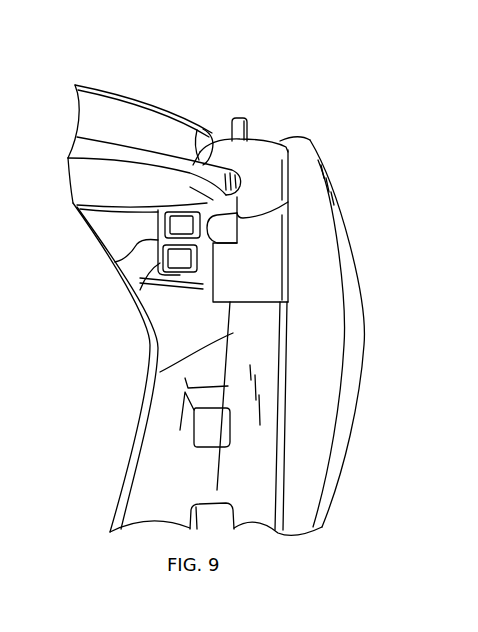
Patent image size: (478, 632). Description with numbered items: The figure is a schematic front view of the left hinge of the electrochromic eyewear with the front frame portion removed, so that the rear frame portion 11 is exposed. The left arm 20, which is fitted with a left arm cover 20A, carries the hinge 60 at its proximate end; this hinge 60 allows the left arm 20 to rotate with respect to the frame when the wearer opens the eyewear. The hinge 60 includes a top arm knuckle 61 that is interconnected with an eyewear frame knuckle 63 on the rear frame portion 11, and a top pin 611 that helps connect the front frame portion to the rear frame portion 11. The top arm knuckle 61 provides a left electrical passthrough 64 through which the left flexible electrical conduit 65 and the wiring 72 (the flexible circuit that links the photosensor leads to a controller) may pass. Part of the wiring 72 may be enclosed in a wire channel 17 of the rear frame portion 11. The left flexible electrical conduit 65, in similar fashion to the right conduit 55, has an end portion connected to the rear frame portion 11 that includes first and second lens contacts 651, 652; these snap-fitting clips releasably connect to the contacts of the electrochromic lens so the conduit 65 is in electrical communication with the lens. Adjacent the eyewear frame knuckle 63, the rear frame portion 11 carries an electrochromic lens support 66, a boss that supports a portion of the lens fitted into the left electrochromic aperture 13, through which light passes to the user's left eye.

The rear frame portion 11 is at (106, 91).
The left electrochromic aperture 13 is at (120, 500).
The wire channel 17 is at (0, 4).
The left arm 20 is at (353, 333).
The left arm cover 20A is at (346, 432).
The right flexible electrical conduit 55 is at (8, 94).
The left hinge 60 is at (240, 98).
The top arm knuckle 61 is at (279, 136).
The top pin 611 is at (248, 130).
The eyewear frame knuckle 63 is at (160, 372).
The left electrical passthrough 64 is at (288, 202).
The left flexible electrical conduit 65 is at (115, 262).
The first lens contact 651 is at (138, 292).
The second lens contact 652 is at (147, 216).
The electrochromic lens support 66 is at (187, 418).
The wiring 72 is at (153, 148).